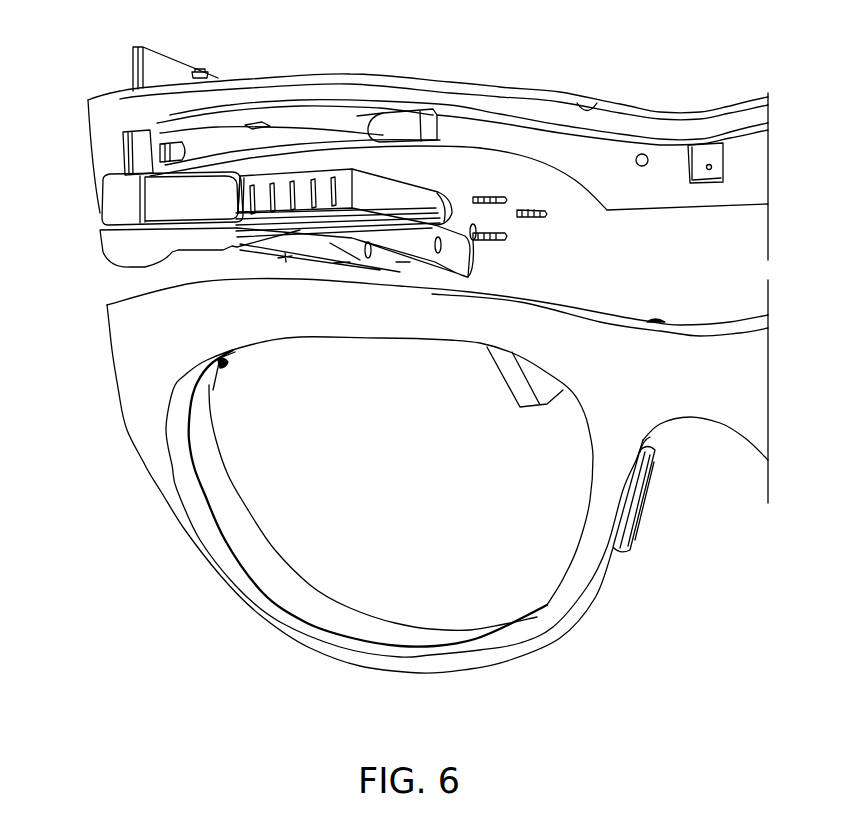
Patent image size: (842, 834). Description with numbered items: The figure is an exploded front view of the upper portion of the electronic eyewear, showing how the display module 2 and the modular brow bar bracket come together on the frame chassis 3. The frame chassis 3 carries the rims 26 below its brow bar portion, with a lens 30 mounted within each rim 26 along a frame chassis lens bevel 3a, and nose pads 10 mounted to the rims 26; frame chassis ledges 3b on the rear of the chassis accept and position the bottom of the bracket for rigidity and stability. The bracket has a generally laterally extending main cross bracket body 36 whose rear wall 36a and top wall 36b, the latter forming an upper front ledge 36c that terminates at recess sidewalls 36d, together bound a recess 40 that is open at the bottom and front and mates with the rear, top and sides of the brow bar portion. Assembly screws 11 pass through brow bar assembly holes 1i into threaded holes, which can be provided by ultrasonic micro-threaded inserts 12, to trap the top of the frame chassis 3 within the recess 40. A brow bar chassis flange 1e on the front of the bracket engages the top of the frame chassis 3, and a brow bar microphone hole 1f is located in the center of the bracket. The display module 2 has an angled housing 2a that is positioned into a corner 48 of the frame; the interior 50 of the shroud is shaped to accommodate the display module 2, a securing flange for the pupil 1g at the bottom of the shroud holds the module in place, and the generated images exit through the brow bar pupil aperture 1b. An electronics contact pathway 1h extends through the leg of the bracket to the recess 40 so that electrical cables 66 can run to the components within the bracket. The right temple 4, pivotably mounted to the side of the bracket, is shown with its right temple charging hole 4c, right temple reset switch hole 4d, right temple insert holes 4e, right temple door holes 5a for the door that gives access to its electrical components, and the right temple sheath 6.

The display module 2 is at (388, 204).
The housing 2a is at (118, 245).
The frame chassis 3 is at (137, 387).
The frame chassis lens bevel 3a is at (207, 485).
The frame chassis ledge 3b is at (213, 390).
The right temple 4 is at (530, 382).
The right temple charging hole 4c is at (344, 264).
The right temple reset switch hole 4d is at (285, 258).
The right temple insert holes 4e is at (368, 258).
The right temple door holes 5a is at (442, 250).
The right temple sheath 6 is at (154, 58).
The nose pads 10 is at (622, 486).
The assembly screws 11 is at (197, 68).
The ultrasonic micro-threaded inserts 12 is at (227, 363).
The rims 26 is at (416, 680).
The lenses 30 is at (426, 528).
The main cross bracket body 36 is at (548, 92).
The rear wall 36a is at (758, 188).
The top wall 36b is at (428, 277).
The upper front ledge 36c is at (592, 112).
The recess sidewalls 36d is at (118, 152).
The recess 40 is at (755, 151).
The corner 48 is at (41, 288).
The interior of the shroud 50 is at (336, 107).
The electrical cables 66 is at (121, 119).
The electronics contact pathway 1h is at (143, 128).
The brow bar pupil aperture 1b is at (392, 124).
The brow bar chassis flange 1e is at (242, 102).
The brow bar microphone hole 1f is at (710, 164).
The securing flange for pupil 1g is at (296, 148).
The brow bar assembly hole 1i is at (643, 153).